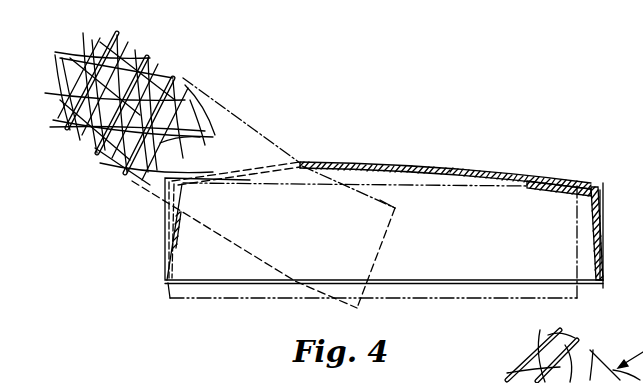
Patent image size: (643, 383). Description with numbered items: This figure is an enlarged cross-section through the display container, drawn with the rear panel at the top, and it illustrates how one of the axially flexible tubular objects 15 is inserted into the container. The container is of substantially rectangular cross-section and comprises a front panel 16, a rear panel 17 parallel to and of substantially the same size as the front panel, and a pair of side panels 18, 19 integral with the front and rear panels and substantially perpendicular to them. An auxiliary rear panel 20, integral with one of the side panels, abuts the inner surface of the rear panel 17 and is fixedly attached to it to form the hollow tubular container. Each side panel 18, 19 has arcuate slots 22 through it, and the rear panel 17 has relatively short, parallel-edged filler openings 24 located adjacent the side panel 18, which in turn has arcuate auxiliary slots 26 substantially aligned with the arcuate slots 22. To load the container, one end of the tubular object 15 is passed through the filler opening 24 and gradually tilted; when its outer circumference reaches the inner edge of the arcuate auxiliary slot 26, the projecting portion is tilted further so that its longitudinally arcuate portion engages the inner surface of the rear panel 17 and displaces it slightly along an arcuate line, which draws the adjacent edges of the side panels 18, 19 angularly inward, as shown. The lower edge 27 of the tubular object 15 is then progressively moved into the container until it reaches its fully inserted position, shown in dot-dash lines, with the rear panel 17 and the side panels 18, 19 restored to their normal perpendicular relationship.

The axially flexible tubular object 15 is at (182, 73).
The front panel 16 is at (495, 290).
The rear panel 17 is at (415, 161).
The side panel 18 is at (173, 238).
The side panel 19 is at (604, 229).
The auxiliary rear panel 20 is at (528, 193).
The arcuate slot 22 is at (168, 252).
The filler opening 24 is at (299, 163).
The arcuate auxiliary slot 26 is at (170, 218).
The lower edge of the tubular object 27 is at (365, 290).